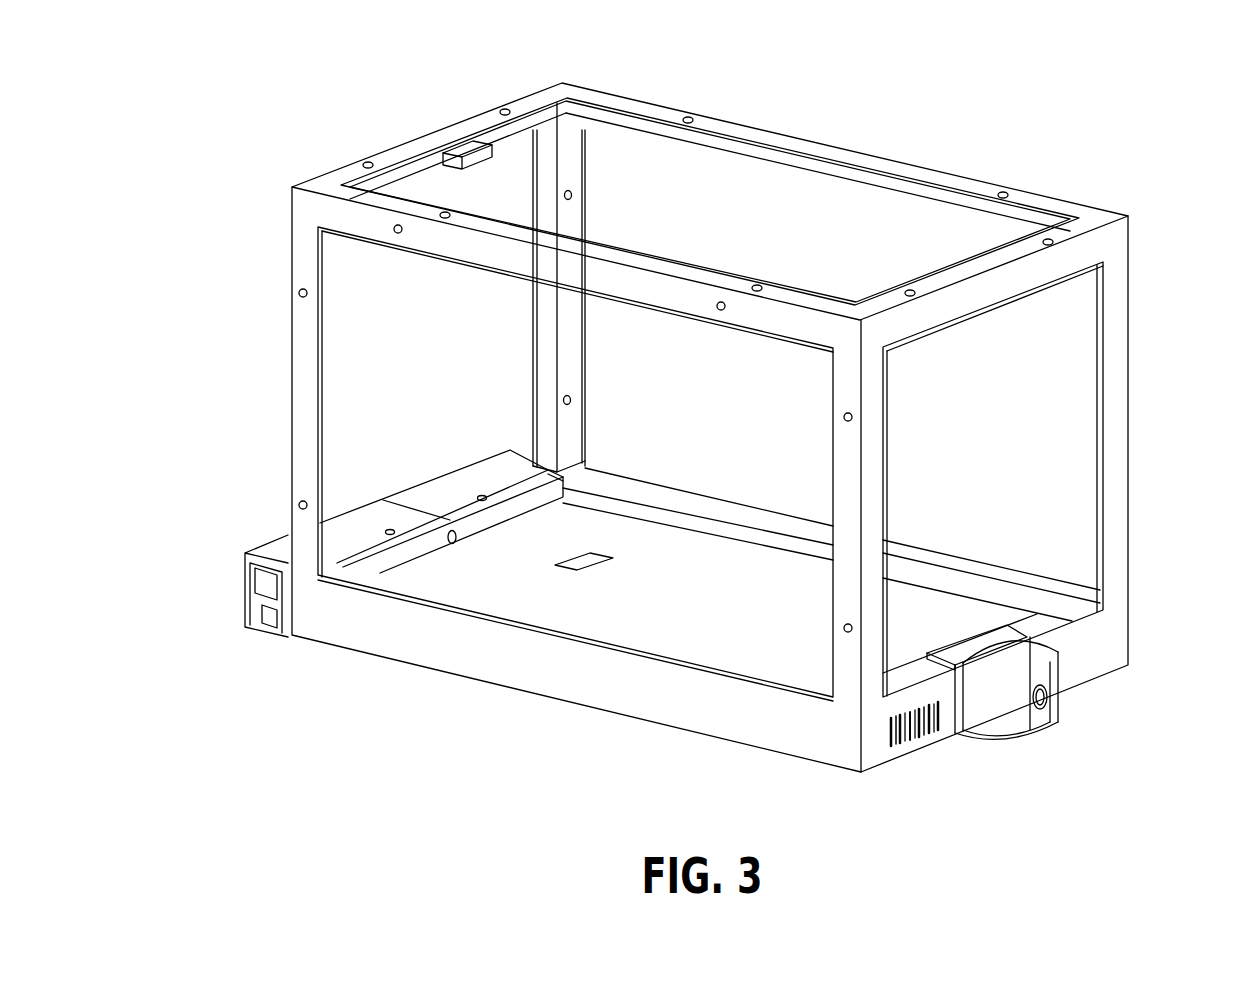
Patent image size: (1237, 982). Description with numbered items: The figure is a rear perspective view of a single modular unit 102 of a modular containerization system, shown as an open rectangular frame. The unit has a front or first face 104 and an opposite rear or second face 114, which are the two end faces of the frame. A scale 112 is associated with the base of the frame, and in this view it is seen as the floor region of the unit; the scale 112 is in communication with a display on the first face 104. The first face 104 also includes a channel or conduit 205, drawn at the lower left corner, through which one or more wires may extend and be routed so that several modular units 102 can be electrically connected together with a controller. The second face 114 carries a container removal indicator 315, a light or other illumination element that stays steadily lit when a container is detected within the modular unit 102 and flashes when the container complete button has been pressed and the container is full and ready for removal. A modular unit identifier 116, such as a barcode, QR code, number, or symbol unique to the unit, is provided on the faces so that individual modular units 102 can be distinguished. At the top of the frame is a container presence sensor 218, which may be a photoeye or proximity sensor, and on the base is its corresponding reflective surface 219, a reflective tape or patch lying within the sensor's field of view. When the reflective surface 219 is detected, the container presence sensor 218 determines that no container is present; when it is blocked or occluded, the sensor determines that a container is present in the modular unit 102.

The modular unit 102 is at (1045, 92).
The first face 104 is at (435, 478).
The scale 112 is at (677, 564).
The second face 114 is at (993, 740).
The modular unit identifier 116 is at (913, 748).
The channel or conduit 205 is at (264, 583).
The container presence sensor 218 is at (488, 168).
The reflective surface 219 is at (568, 572).
The container removal indicator 315 is at (1052, 699).